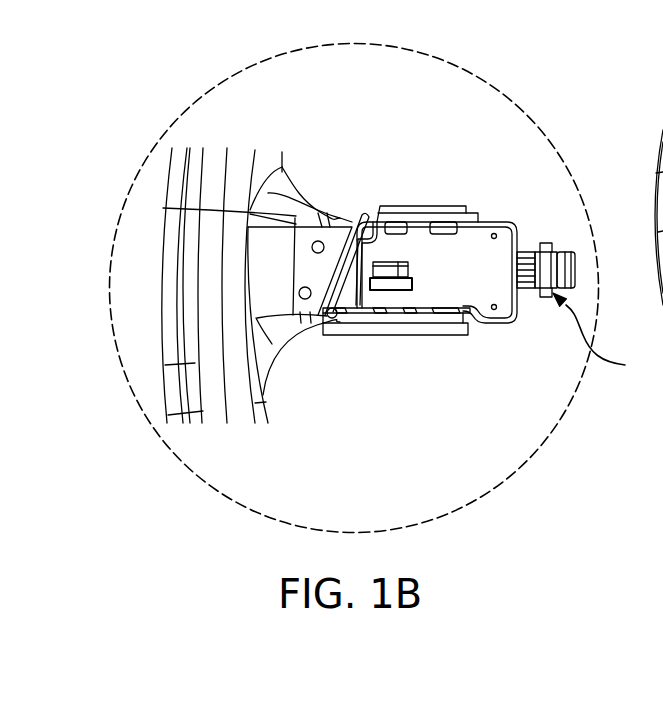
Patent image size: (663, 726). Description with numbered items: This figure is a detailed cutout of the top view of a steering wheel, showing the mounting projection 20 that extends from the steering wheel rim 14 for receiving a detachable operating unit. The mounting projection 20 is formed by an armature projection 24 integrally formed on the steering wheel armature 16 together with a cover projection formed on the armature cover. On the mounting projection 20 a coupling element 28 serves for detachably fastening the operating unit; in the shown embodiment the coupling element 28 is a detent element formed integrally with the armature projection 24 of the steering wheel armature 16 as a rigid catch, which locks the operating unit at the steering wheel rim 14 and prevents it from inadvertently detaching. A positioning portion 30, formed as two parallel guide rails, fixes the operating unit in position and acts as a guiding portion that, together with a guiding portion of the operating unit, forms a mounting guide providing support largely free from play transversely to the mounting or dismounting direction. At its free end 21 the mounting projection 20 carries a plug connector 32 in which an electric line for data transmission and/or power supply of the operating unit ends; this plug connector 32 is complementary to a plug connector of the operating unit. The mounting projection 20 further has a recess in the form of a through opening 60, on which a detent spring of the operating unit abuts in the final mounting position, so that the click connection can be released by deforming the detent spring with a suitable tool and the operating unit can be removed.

The steering wheel rim 14 is at (283, 270).
The steering wheel armature 16 is at (268, 193).
The mounting projection 20 is at (499, 206).
The free end 21 is at (605, 338).
The armature projection 24 is at (507, 323).
The coupling element 28 is at (378, 222).
The positioning portion 30 is at (424, 214).
The plug connector 32 is at (548, 266).
The through opening 60 is at (388, 290).